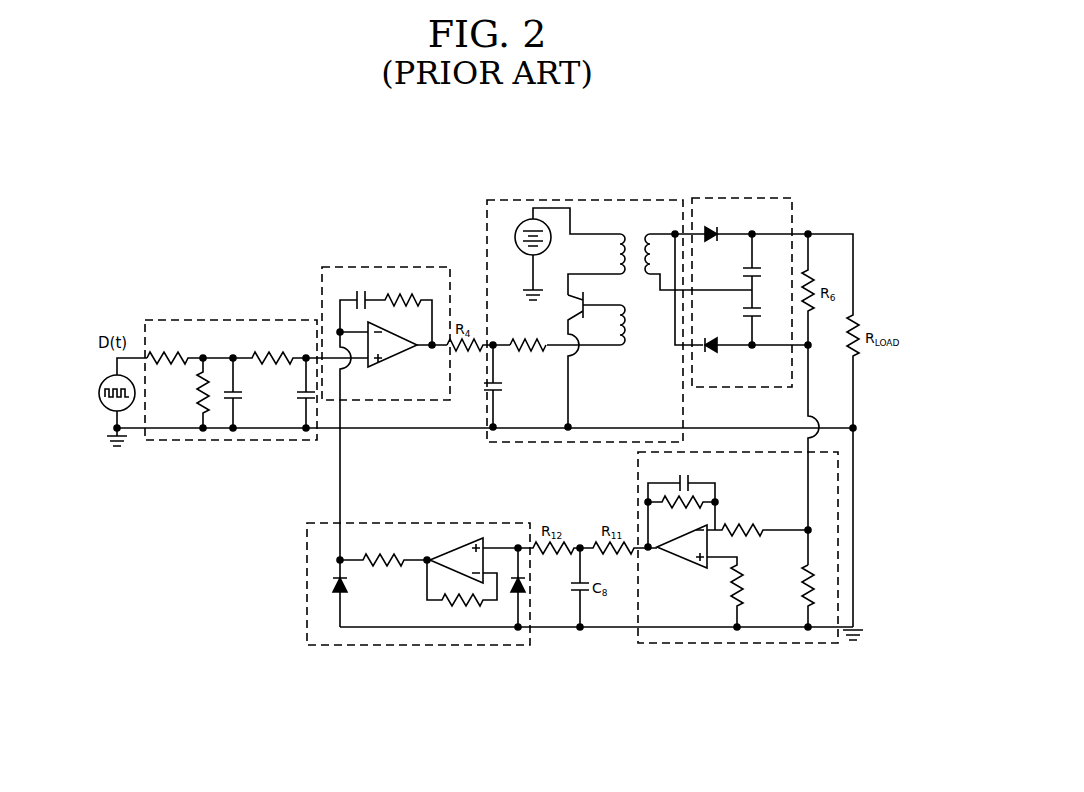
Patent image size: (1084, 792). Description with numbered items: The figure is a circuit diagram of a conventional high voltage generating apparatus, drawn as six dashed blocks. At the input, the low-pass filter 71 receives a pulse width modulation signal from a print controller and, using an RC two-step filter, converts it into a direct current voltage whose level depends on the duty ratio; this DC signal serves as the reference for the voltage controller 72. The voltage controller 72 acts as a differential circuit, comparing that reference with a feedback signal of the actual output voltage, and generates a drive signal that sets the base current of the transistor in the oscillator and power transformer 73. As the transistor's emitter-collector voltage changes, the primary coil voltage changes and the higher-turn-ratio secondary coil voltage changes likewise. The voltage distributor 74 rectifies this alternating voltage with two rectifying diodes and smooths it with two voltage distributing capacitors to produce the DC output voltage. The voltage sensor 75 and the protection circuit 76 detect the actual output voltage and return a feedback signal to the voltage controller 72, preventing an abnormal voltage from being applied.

The low-pass filter 71 is at (228, 320).
The voltage controller 72 is at (386, 267).
The oscillator and power transformer 73 is at (582, 200).
The voltage distributor 74 is at (741, 199).
The voltage sensor 75 is at (732, 645).
The protection circuit 76 is at (414, 646).